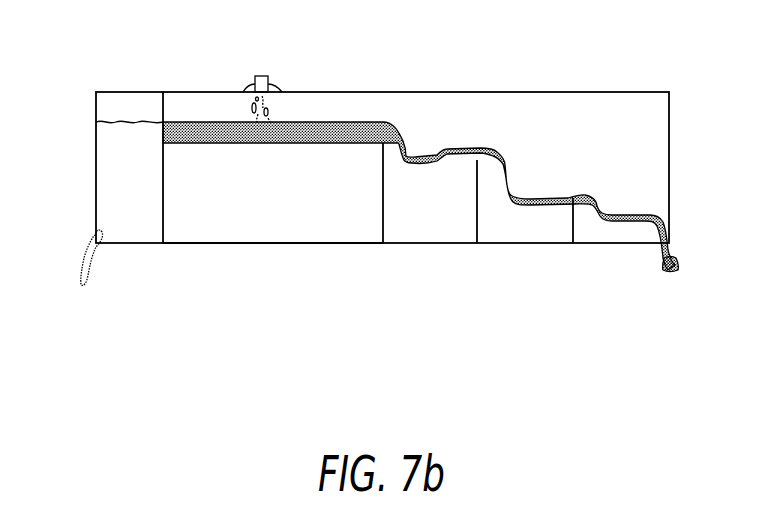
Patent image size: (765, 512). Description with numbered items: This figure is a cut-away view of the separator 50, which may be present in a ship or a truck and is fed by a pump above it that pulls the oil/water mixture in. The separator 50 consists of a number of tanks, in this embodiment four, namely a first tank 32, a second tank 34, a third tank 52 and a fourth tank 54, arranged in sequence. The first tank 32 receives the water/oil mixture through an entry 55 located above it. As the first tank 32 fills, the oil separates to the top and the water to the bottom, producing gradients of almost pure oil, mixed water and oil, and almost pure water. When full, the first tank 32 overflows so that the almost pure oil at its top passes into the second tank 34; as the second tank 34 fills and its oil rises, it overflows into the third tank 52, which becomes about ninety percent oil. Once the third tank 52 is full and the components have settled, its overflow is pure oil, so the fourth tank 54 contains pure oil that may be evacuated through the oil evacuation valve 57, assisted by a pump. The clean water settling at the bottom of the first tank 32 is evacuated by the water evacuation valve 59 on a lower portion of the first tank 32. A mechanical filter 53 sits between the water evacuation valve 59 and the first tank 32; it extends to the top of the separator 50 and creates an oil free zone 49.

The separator 50 is at (397, 73).
The oil free zone 49 is at (110, 182).
The mechanical filter 53 is at (165, 92).
The entry 55 is at (265, 76).
The third tank 52 is at (510, 232).
The first tank 32 is at (200, 224).
The second tank 34 is at (415, 232).
The fourth tank 54 is at (602, 232).
The oil evacuation valve 57 is at (680, 253).
The water evacuation valve 59 is at (88, 250).